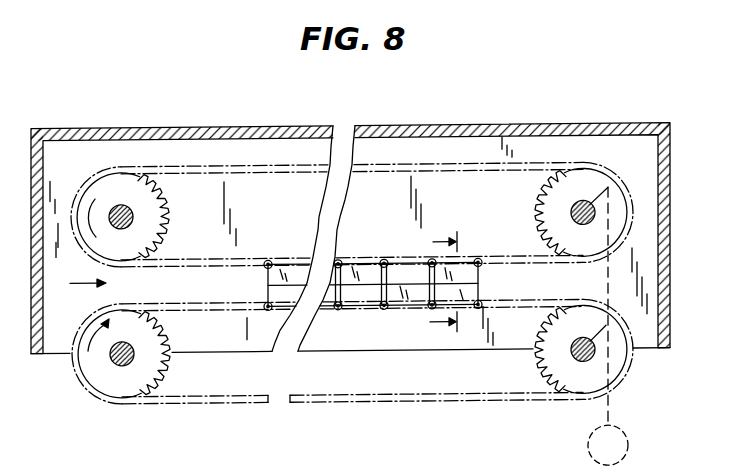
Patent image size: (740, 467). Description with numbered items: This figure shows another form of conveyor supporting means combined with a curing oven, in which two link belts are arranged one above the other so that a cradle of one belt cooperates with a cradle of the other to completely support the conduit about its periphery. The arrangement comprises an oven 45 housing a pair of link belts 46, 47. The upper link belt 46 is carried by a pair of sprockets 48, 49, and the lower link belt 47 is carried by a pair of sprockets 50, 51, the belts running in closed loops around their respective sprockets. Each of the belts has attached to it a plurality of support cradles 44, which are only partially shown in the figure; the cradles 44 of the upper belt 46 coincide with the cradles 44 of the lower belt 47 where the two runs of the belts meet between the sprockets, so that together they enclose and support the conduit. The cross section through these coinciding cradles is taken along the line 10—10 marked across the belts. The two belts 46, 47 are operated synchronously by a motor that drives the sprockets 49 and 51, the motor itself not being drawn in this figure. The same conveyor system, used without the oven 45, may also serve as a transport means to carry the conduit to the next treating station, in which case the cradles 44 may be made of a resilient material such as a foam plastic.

The section line 10— 10 is at (456, 281).
The support cradles 44 is at (409, 275).
The oven 45 is at (269, 130).
The link belt 46 is at (258, 176).
The link belt 47 is at (188, 313).
The sprocket 48 is at (154, 219).
The sprocket 49 is at (553, 209).
The sprocket 50 is at (153, 369).
The sprocket 51 is at (553, 364).